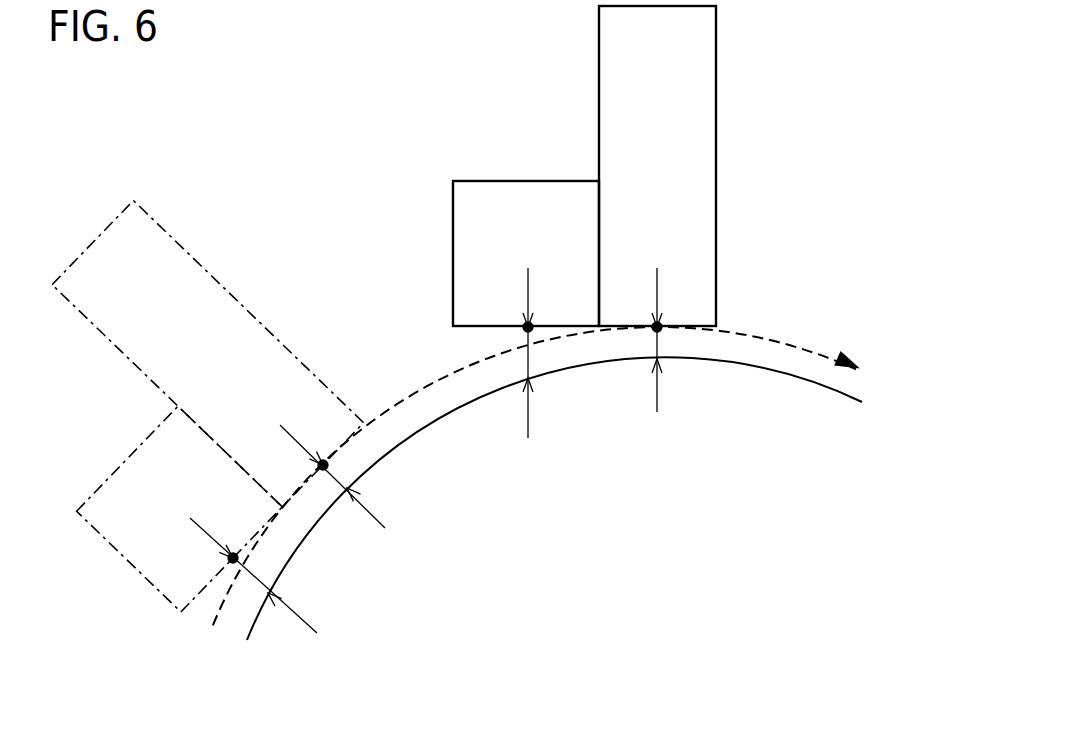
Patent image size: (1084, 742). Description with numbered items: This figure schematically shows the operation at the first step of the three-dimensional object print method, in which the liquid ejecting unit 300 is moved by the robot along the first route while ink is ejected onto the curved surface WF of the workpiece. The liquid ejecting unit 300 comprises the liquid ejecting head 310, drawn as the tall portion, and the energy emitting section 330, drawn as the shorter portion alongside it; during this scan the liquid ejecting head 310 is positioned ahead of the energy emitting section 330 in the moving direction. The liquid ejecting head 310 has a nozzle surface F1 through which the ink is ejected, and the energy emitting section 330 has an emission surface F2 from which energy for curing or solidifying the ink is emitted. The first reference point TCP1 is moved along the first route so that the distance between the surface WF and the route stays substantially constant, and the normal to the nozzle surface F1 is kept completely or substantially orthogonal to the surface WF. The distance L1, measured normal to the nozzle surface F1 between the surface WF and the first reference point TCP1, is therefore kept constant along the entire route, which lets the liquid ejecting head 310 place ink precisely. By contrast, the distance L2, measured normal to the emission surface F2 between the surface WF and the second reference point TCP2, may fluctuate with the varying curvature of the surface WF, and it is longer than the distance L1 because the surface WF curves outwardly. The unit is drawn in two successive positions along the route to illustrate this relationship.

The liquid ejecting unit 300 is at (415, 309).
The liquid ejecting head 310 is at (717, 142).
The energy emitting section 330 is at (528, 181).
The nozzle surface F1 is at (700, 328).
The emission surface F2 is at (470, 328).
The surface of the workpiece WF is at (812, 382).
The first reference point TCP1 is at (660, 329).
The second reference point TCP2 is at (515, 332).
The distance L1 is at (475, 406).
The distance L2 is at (364, 462).